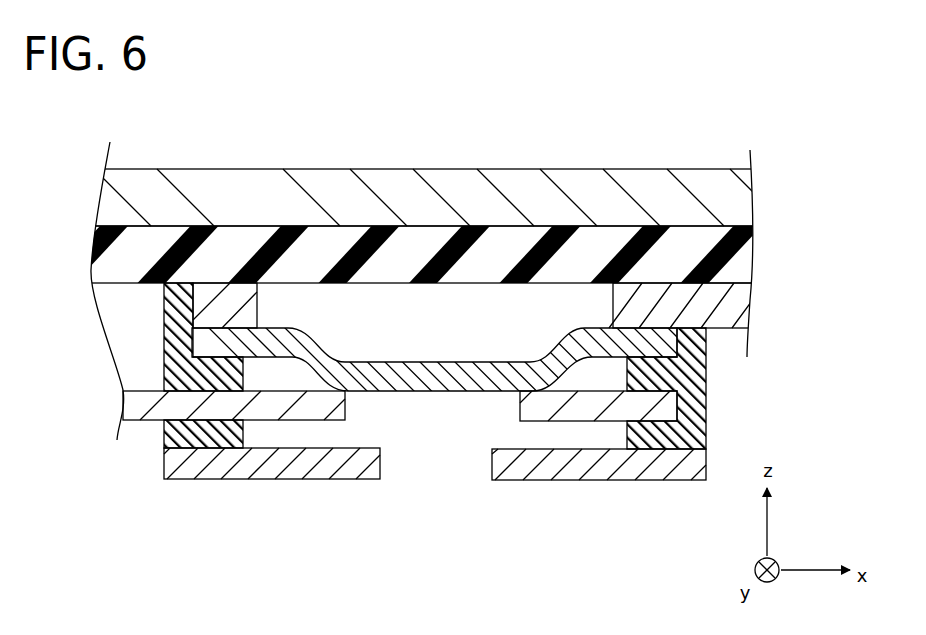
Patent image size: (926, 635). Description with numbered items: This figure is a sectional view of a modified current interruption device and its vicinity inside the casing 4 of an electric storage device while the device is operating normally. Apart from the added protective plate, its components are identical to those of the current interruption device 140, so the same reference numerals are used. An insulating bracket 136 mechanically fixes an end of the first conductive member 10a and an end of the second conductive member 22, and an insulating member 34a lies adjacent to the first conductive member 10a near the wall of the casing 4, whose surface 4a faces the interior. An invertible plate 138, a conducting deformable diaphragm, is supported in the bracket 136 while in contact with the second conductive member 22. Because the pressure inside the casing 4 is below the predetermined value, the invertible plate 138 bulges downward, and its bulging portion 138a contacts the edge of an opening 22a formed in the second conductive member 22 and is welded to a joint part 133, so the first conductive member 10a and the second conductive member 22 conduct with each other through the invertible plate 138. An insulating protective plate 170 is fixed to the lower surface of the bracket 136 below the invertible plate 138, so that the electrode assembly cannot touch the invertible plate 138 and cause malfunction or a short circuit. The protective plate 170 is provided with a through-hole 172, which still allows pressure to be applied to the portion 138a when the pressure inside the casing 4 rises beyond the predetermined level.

The casing 4 is at (460, 193).
The surface of substrate 4a is at (572, 190).
The first conductive member 10a is at (220, 300).
The insulating member 34a is at (400, 257).
The second conductive member 22 is at (137, 407).
The opening 22a is at (475, 417).
The joint part 133 is at (348, 396).
The insulating bracket 136 is at (191, 440).
The invertible plate 138 is at (447, 383).
The portion of the invertible plate 138a is at (410, 398).
The current interruption device 140 is at (162, 523).
The protective plate 170 is at (620, 472).
The through-hole 172 is at (403, 477).